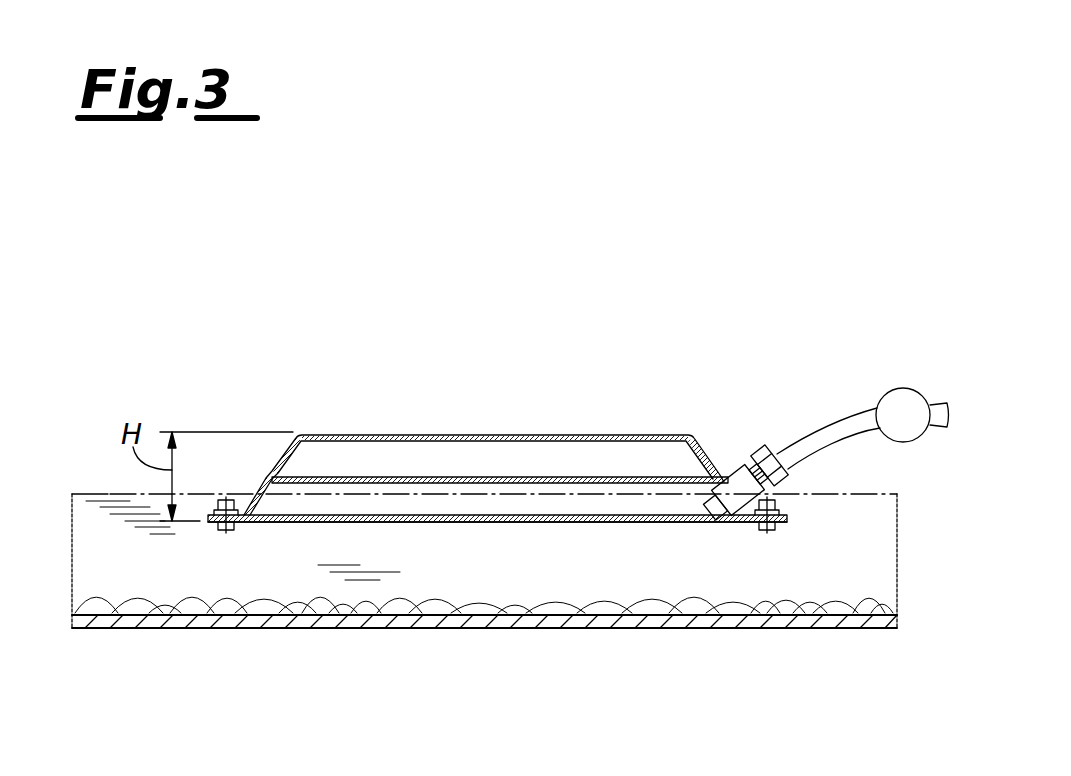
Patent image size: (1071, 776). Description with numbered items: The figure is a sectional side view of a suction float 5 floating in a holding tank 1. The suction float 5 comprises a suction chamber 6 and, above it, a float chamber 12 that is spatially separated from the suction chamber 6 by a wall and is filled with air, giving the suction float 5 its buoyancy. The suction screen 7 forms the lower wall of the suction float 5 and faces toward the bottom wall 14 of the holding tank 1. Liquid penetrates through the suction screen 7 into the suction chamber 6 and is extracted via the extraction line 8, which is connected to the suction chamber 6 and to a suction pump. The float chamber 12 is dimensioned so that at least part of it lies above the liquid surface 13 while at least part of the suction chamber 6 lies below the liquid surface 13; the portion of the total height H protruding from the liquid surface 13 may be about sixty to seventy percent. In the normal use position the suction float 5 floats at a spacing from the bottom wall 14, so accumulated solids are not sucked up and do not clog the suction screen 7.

The holding tank 1 is at (688, 325).
The suction float 5 is at (338, 426).
The suction chamber 6 is at (422, 508).
The suction screen 7 is at (623, 524).
The extraction line 8 is at (828, 428).
The float chamber 12 is at (552, 458).
The liquid surface 13 is at (107, 494).
The bottom wall 14 is at (373, 618).